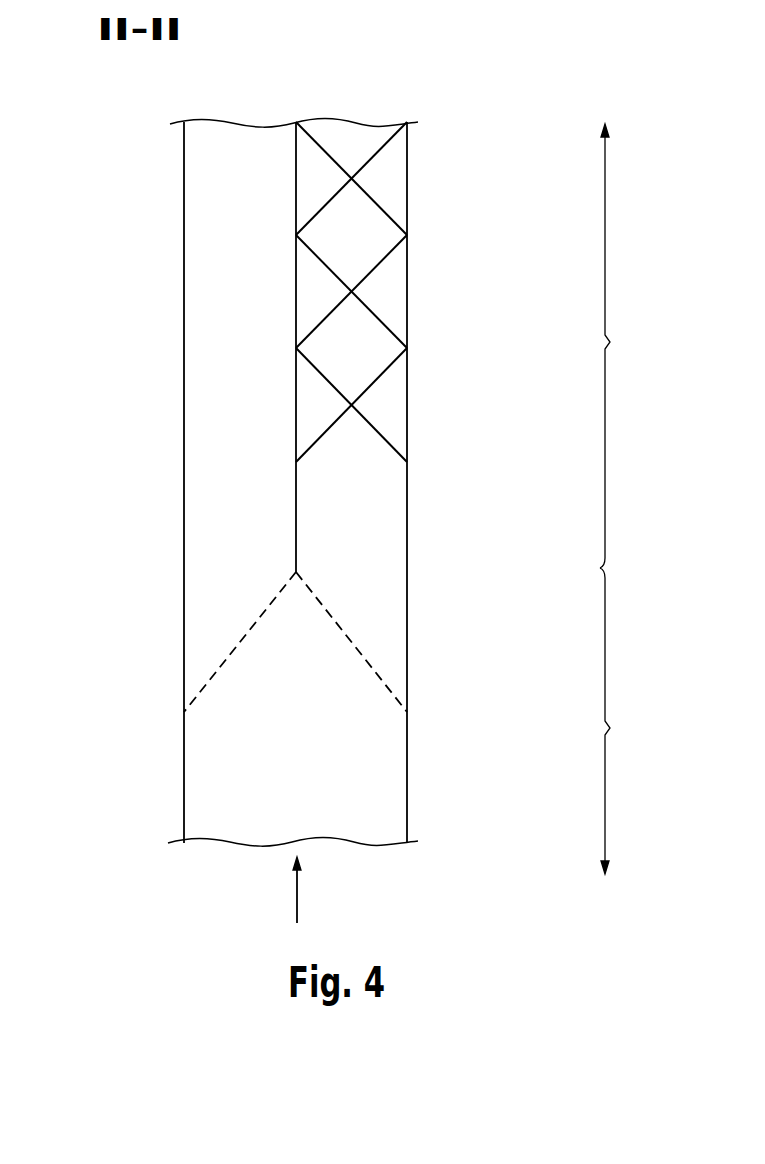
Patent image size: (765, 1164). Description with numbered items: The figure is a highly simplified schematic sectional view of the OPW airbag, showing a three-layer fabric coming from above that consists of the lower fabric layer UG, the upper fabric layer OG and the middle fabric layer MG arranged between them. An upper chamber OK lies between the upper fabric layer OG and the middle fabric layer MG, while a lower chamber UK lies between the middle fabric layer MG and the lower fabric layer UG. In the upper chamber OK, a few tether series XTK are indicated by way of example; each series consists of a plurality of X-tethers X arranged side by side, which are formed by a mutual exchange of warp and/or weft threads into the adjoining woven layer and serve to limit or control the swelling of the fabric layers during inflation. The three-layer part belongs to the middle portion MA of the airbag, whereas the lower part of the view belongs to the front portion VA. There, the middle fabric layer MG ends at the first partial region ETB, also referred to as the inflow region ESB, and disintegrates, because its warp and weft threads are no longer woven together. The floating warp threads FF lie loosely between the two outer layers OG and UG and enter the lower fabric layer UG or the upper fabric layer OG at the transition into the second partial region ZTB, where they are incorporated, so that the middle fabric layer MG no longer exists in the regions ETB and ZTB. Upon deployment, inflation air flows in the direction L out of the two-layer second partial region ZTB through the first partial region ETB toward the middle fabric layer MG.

The lower fabric layer UG is at (183, 191).
The upper fabric layer OG is at (407, 152).
The middle fabric layer MG is at (296, 146).
The X-tether X is at (378, 428).
The tether series XTK is at (451, 233).
The lower chamber UK is at (260, 370).
The upper chamber OK is at (372, 535).
The first partial region ETB is at (374, 641).
The inflow region ESB is at (427, 570).
The floating warp threads FF is at (375, 673).
The second partial region ZTB is at (427, 715).
The middle portion MA is at (630, 346).
The front portion VA is at (627, 721).
The direction of inflation air L is at (297, 897).